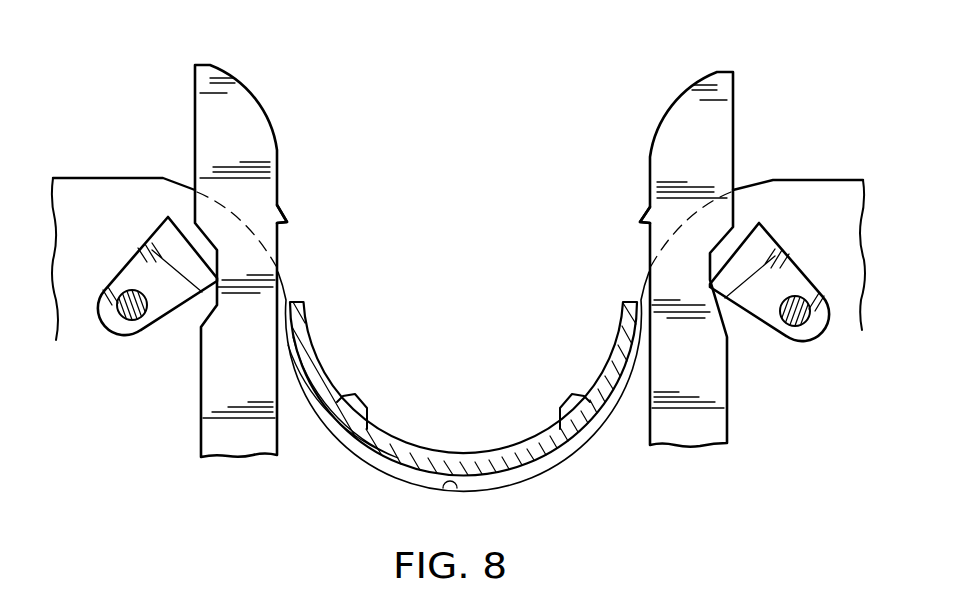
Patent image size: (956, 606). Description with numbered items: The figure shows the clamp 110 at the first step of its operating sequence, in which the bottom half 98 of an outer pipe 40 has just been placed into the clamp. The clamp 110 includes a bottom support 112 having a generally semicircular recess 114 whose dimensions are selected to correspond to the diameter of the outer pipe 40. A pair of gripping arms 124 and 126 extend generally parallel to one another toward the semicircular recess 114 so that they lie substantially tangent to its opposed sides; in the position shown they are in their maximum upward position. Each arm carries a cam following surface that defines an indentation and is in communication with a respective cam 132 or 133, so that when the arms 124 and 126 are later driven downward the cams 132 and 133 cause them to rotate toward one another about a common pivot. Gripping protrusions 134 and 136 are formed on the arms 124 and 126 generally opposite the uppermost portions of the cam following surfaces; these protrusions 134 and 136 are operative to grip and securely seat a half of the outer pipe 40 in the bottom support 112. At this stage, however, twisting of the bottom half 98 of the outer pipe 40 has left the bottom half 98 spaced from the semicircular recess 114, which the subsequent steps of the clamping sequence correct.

The clamp 110 is at (525, 105).
The bottom support 112 is at (797, 178).
The gripping arm 124 is at (223, 125).
The gripping arm 126 is at (702, 122).
The gripping protrusion 134 is at (282, 205).
The gripping protrusion 136 is at (645, 210).
The cam 132 is at (163, 313).
The cam 133 is at (813, 268).
The semicircular recess 114 is at (450, 487).
The bottom half of outer pipe 98 is at (398, 458).
The outer pipe 40 is at (553, 452).